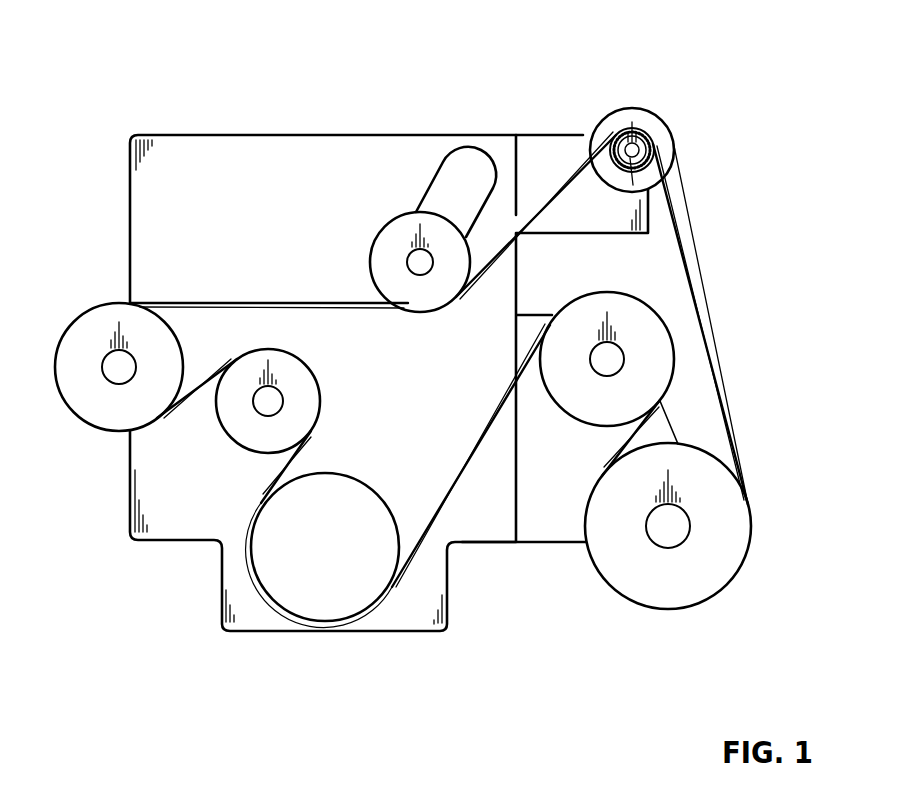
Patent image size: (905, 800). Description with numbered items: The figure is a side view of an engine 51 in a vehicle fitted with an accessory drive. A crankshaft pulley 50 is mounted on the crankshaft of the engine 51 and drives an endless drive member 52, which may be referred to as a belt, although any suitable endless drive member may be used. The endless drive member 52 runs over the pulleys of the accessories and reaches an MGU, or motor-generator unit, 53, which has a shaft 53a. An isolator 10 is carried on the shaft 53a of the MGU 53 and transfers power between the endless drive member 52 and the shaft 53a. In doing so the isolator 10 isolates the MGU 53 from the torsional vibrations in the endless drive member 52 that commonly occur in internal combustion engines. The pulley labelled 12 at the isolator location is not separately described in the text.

The isolator 10 is at (393, 528).
The tensioner pulley 12 is at (640, 123).
The crankshaft pulley 50 is at (310, 617).
The engine 51 is at (237, 573).
The endless drive member 52 is at (191, 302).
The MGU (motor-generator unit) 53 is at (617, 115).
The shaft 53a is at (630, 158).